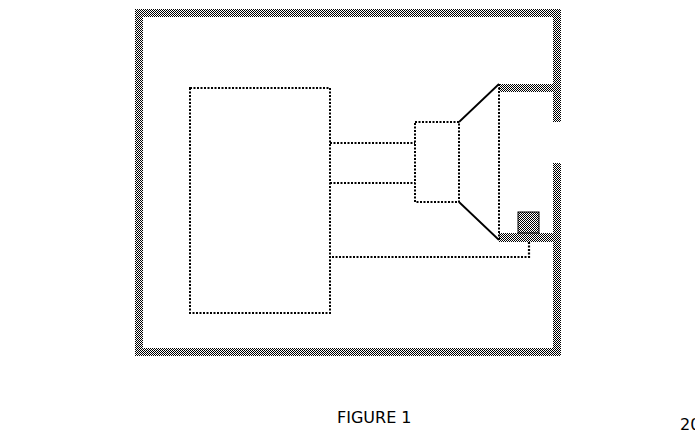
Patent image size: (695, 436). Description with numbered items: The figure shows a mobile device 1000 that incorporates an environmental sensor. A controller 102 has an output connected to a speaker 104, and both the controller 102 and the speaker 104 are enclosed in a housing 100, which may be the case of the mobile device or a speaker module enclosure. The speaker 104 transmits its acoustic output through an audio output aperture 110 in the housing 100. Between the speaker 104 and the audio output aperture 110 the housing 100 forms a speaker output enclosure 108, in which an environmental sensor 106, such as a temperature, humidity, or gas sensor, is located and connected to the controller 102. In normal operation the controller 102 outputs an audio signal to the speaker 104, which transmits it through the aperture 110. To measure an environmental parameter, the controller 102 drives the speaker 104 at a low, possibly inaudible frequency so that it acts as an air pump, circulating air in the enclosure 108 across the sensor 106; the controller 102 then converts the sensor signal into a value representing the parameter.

The housing 100 is at (137, 173).
The controller 102 is at (274, 313).
The speaker 104 is at (443, 123).
The environmental sensor 106 is at (538, 212).
The speaker output enclosure 108 is at (519, 145).
The audio output aperture 110 is at (556, 147).
The mobile device 1000 is at (386, 311).